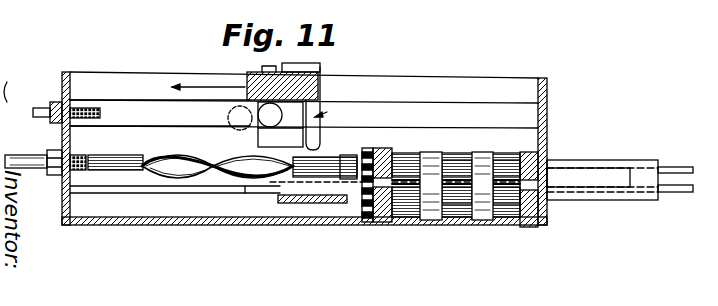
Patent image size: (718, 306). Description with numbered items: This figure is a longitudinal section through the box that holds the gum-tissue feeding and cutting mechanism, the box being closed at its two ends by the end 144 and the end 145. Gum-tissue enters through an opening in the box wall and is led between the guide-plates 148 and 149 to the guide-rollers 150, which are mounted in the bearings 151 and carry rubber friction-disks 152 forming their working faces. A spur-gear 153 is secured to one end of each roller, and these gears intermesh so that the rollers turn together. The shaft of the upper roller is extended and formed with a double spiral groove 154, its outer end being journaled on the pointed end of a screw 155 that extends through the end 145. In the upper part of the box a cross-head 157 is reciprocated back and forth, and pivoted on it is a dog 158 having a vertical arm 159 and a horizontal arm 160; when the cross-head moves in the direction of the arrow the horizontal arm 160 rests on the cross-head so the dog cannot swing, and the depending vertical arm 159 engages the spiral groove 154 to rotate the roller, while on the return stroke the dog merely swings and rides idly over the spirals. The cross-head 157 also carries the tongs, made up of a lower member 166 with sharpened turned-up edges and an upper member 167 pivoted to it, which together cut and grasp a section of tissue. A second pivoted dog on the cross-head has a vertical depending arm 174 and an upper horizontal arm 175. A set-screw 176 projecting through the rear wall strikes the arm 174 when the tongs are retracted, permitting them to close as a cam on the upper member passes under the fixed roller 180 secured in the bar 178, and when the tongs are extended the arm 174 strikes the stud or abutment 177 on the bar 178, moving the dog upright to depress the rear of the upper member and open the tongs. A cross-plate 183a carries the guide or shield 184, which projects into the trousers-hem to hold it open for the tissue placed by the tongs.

The end 144 is at (547, 136).
The end 145 is at (64, 137).
The guide-plate 148 is at (407, 158).
The guide-plate 149 is at (548, 208).
The guide-roller 150 is at (460, 160).
The bearing 151 is at (383, 156).
The friction-disk 152 is at (435, 152).
The spur-gear 153 is at (362, 156).
The double spiral groove 154 is at (196, 160).
The screw 155 is at (81, 155).
The cross-head 157 is at (280, 86).
The dog 158 is at (322, 72).
The vertical arm 159 is at (338, 115).
The horizontal arm 160 is at (294, 64).
The lower member 166 is at (672, 194).
The upper member 167 is at (672, 170).
The vertical depending arm 174 is at (300, 137).
The upper horizontal arm 175 is at (268, 72).
The set-screw 176 is at (37, 110).
The stud or abutment 177 is at (285, 115).
The bar 178 is at (160, 113).
The fixed abutment or roller 180 is at (228, 117).
The cross-plate 183a is at (305, 205).
The guide or shield 184 is at (645, 202).